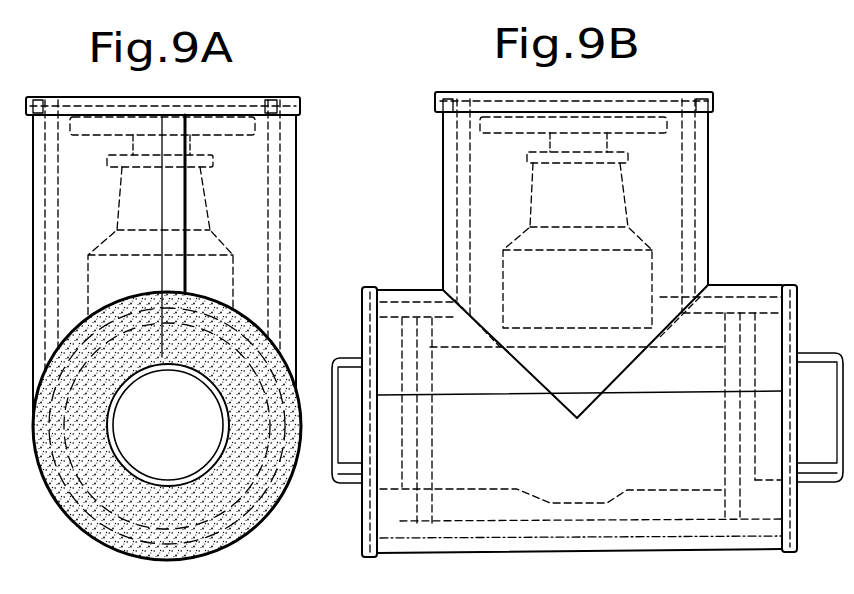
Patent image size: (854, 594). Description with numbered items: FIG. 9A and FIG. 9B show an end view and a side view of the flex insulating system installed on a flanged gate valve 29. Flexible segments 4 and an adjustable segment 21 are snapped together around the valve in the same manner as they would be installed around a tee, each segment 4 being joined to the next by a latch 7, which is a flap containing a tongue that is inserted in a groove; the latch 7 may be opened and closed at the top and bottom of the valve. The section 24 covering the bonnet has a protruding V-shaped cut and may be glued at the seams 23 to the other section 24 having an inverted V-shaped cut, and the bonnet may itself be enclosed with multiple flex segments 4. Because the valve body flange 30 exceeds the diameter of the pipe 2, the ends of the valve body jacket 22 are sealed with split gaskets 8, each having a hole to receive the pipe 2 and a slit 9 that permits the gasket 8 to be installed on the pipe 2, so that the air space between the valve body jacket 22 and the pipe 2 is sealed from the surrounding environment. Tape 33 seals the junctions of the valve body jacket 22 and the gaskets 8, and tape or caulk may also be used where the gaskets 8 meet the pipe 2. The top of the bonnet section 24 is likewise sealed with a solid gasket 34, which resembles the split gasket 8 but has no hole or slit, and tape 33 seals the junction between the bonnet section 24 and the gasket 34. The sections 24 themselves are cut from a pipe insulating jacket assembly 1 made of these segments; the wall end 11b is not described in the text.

In FIG. 9B, the insulating jacket assembly 1 is at (382, 524).
In FIG. 9A, the pipe 2 is at (112, 430).
In FIG. 9B, the pipe 2 is at (337, 488).
In FIG. 9B, the flex segment 4 is at (445, 484).
In FIG. 9A, the latch 7 is at (186, 200).
In FIG. 9A, the split gasket 8 is at (220, 377).
In FIG. 9B, the split gasket 8 is at (362, 300).
In FIG. 9A, the slit 9 is at (162, 360).
In FIG. 9B, the partition plate 11b is at (510, 396).
In FIG. 9B, the adjustable segment 21 is at (392, 347).
In FIG. 9A, the valve body jacket 22 is at (338, 166).
In FIG. 9B, the valve body jacket 22 is at (775, 206).
In FIG. 9B, the seam 23 is at (613, 378).
In FIG. 9A, the section 24 is at (287, 207).
In FIG. 9B, the section 24 is at (698, 180).
In FIG. 9A, the flanged gate valve 29 is at (233, 255).
In FIG. 9B, the flanged gate valve 29 is at (697, 278).
In FIG. 9B, the valve body flange 30 is at (372, 538).
In FIG. 9A, the tape 33 is at (300, 108).
In FIG. 9B, the tape 33 is at (714, 101).
In FIG. 9A, the solid gasket 34 is at (262, 97).
In FIG. 9B, the solid gasket 34 is at (665, 92).